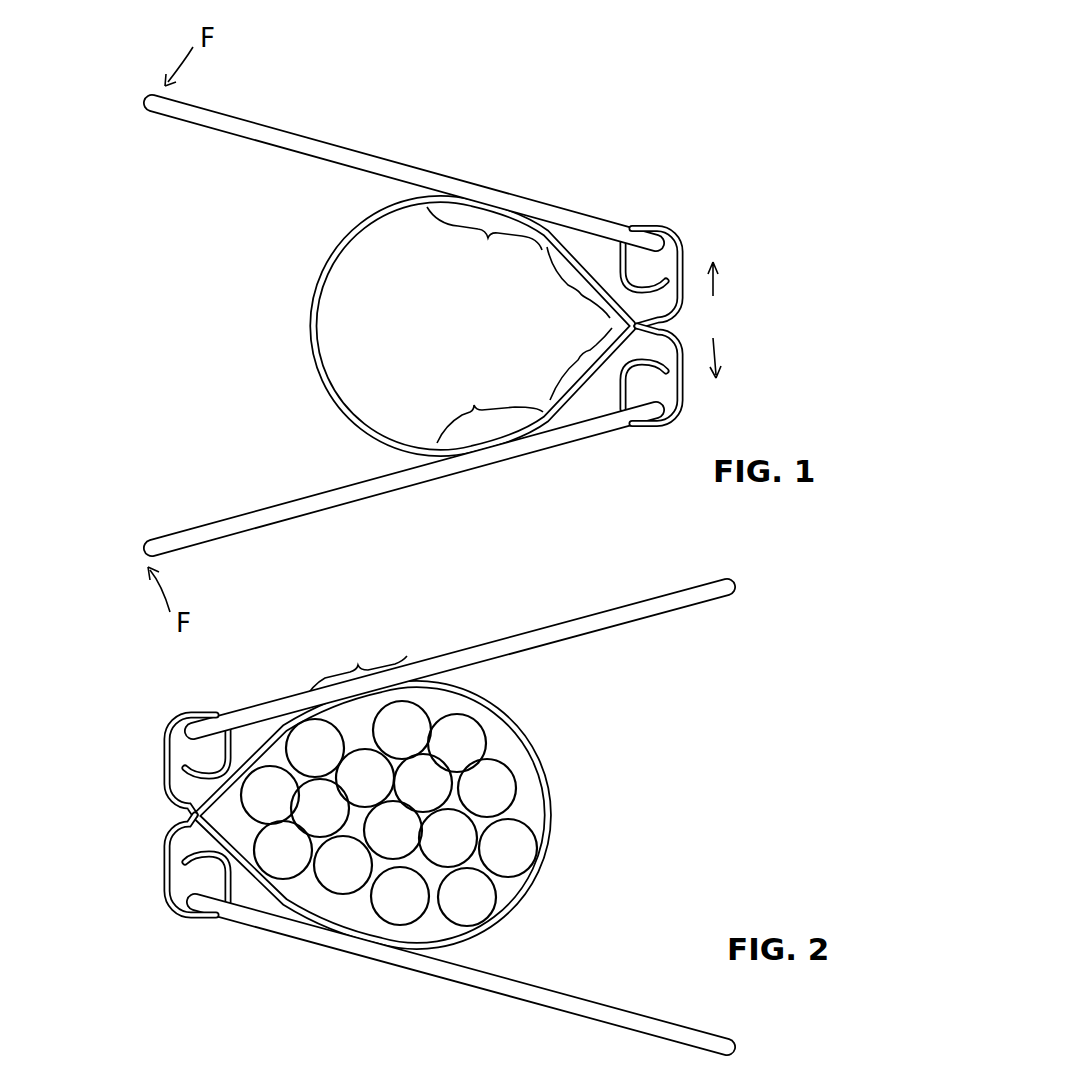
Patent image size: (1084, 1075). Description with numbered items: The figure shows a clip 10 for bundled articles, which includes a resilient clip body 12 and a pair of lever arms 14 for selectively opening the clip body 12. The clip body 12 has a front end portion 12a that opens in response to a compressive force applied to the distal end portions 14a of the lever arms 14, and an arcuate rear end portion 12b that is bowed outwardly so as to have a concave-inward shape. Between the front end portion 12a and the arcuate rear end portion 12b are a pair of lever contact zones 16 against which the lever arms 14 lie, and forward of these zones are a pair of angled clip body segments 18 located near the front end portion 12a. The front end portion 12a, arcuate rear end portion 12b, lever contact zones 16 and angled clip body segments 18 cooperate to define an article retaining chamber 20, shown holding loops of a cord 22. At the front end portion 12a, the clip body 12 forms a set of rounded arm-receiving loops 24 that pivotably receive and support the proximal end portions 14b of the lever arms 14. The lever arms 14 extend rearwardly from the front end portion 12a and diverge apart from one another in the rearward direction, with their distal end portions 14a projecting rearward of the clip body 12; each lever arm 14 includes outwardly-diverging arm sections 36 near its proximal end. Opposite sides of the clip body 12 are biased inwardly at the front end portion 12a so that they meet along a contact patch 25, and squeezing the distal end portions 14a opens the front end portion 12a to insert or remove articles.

In FIG. 1, the clip 10 is at (484, 310).
In FIG. 2, the clip 10 is at (400, 808).
In FIG. 1, the resilient clip body 12 is at (350, 232).
In FIG. 2, the resilient clip body 12 is at (436, 825).
In FIG. 1, the front end portion 12a is at (484, 322).
In FIG. 2, the front end portion 12a is at (386, 808).
In FIG. 1, the arcuate rear end portion 12b is at (283, 336).
In FIG. 2, the arcuate rear end portion 12b is at (589, 843).
In FIG. 1, the lever arms 14 is at (397, 161).
In FIG. 2, the lever arms 14 is at (474, 647).
In FIG. 1, the distal end portions 14a is at (177, 150).
In FIG. 2, the distal end portions 14a is at (693, 551).
In FIG. 1, the proximal end portions 14b is at (618, 204).
In FIG. 2, the proximal end portions 14b is at (246, 695).
In FIG. 1, the lever contact zones 16 is at (485, 325).
In FIG. 2, the lever contact zones 16 is at (355, 670).
In FIG. 1, the angled clip body segments 18 is at (576, 323).
In FIG. 2, the angled clip body segments 18 is at (225, 785).
In FIG. 1, the article retaining chamber 20 is at (456, 341).
In FIG. 2, the article retaining chamber 20 is at (452, 708).
In FIG. 2, the cord 22 is at (505, 770).
In FIG. 1, the rounded arm-receiving loops 24 is at (444, 322).
In FIG. 2, the rounded arm-receiving loops 24 is at (424, 808).
In FIG. 2, the contact patch 25 is at (188, 800).
In FIG. 2, the outwardly-diverging arm sections 36 is at (295, 1061).